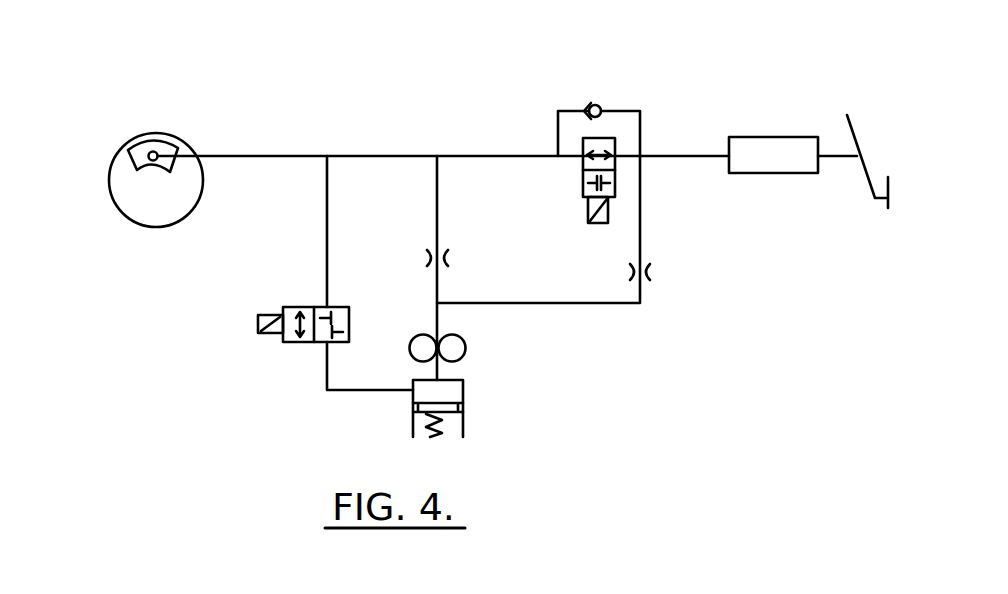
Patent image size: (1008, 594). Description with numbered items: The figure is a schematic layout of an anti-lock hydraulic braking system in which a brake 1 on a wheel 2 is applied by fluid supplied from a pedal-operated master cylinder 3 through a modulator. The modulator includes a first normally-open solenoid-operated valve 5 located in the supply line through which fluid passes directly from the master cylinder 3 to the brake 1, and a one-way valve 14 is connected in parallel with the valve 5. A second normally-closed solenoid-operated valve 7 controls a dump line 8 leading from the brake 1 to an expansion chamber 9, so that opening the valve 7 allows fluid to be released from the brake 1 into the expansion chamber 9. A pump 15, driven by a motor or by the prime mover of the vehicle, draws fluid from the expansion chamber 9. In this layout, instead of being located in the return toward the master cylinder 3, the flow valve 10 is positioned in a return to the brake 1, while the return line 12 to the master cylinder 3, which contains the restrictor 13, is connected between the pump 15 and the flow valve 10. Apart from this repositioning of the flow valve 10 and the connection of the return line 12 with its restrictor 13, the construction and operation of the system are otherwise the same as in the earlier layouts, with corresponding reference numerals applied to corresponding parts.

The brake 1 is at (141, 153).
The wheel 2 is at (155, 205).
The pedal-operated master cylinder 3 is at (773, 152).
The first normally-open solenoid-operated valve 5 is at (588, 209).
The second normally-closed solenoid-operated valve 7 is at (260, 322).
The dump line 8 is at (327, 236).
The expansion chamber 9 is at (428, 389).
The flow valve 10 is at (428, 267).
The return line 12 is at (642, 199).
The restrictor 13 is at (648, 272).
The one-way valve 14 is at (602, 110).
The pump 15 is at (448, 351).